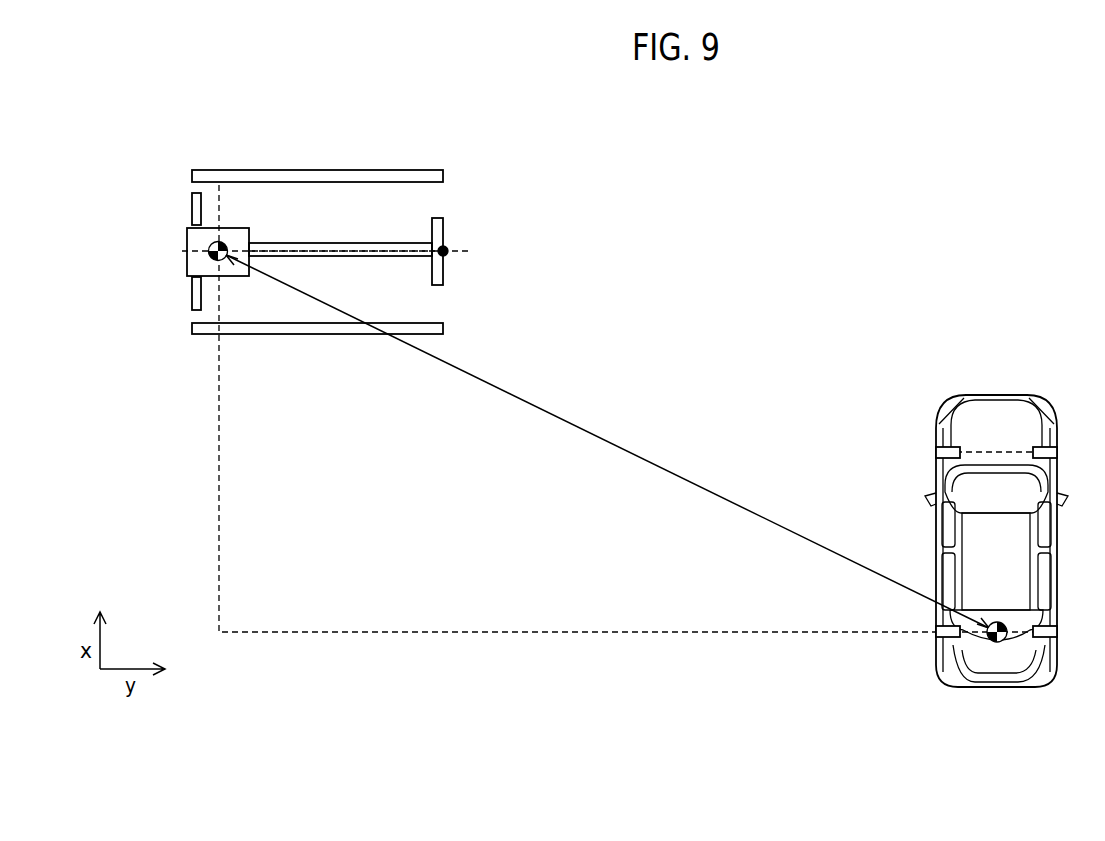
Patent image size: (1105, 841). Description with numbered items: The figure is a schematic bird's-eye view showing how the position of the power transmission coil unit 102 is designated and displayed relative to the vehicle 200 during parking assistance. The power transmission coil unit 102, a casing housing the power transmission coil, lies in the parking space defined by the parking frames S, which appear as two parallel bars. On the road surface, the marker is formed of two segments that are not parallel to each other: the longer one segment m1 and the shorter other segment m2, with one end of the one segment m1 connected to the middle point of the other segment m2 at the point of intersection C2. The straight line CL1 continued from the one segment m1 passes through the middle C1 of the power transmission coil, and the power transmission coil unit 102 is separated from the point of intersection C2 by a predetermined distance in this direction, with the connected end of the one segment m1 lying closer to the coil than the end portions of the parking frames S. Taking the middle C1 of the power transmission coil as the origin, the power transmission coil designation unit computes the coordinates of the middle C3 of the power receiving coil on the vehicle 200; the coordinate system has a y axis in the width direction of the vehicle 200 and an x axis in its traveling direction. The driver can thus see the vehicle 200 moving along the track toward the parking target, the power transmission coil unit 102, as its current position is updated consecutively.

The power transmission coil unit 102 is at (187, 242).
The vehicle 200 is at (1013, 407).
The middle of the power transmission coil C1 is at (213, 258).
The point of intersection C2 is at (446, 246).
The middle of the power receiving coil C3 is at (1001, 640).
The one segment m1 is at (334, 243).
The other segment m2 is at (437, 274).
The straight line CL1 is at (350, 253).
The parking frames S is at (408, 174).